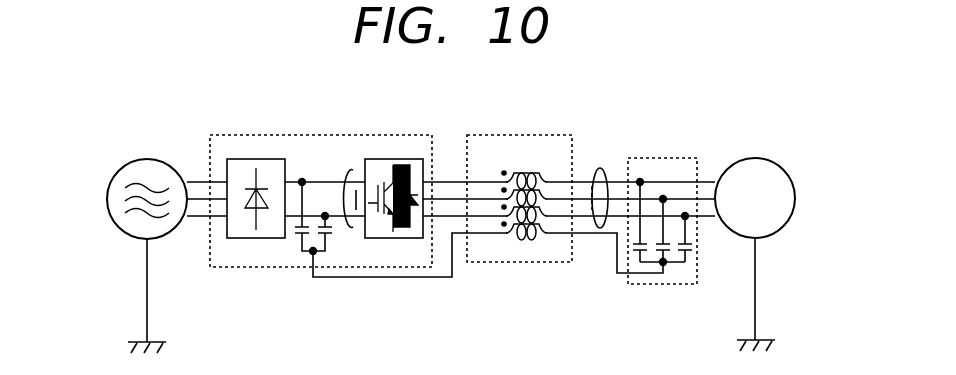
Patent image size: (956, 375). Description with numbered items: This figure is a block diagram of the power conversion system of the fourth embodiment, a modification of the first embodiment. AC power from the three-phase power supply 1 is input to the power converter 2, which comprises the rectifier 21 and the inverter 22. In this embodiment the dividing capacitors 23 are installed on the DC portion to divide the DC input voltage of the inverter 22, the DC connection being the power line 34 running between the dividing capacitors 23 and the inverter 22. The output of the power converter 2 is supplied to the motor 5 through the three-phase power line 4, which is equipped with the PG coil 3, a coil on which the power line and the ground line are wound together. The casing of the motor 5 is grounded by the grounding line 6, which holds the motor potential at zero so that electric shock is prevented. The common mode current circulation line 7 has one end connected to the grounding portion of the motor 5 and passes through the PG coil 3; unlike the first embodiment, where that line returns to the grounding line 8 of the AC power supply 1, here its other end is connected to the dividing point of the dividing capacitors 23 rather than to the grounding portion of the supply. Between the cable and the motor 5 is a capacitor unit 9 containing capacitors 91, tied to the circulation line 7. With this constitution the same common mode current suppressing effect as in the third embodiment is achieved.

The three-phase power supply 1 is at (131, 162).
The power converter 2 is at (383, 135).
The rectifier 21 is at (257, 238).
The inverter 22 is at (393, 238).
The dividing capacitors 23 is at (308, 252).
The power line 34 is at (346, 172).
The PG coil 3 is at (518, 134).
The three-phase power line 4 is at (602, 168).
The motor 5 is at (758, 159).
The grounding line 6 is at (756, 293).
The common mode current circulation line 7 is at (599, 233).
The grounding line 8 is at (147, 289).
The filter capacitor unit 9 is at (662, 158).
The filter capacitors 91 is at (650, 254).